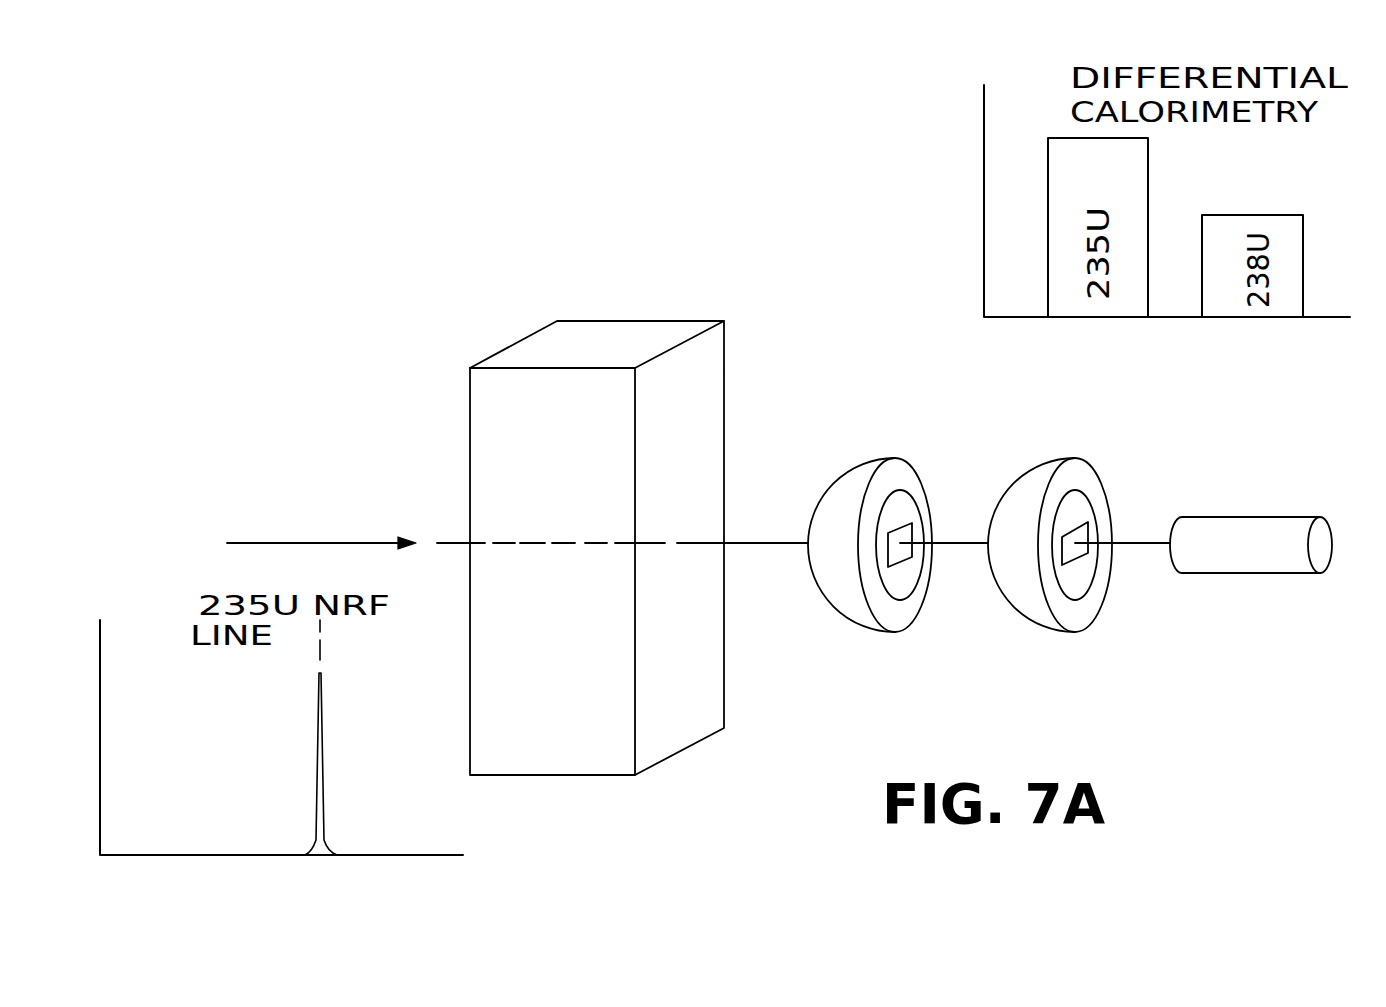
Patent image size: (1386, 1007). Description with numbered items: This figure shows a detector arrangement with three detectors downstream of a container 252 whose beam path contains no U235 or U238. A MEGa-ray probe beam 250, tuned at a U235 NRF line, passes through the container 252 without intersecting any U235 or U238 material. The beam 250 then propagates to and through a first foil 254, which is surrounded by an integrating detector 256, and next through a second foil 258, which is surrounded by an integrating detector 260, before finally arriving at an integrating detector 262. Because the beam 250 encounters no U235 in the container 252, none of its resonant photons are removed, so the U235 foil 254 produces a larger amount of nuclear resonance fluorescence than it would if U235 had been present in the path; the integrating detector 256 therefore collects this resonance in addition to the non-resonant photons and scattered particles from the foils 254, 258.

The MEGa-ray probe beam 250 is at (312, 542).
The container 252 is at (642, 332).
The first foil 254 is at (925, 580).
The integrating detector 256 is at (890, 458).
The second foil 258 is at (1085, 562).
The integrating detector 260 is at (1070, 460).
The integrating detector 262 is at (1213, 517).